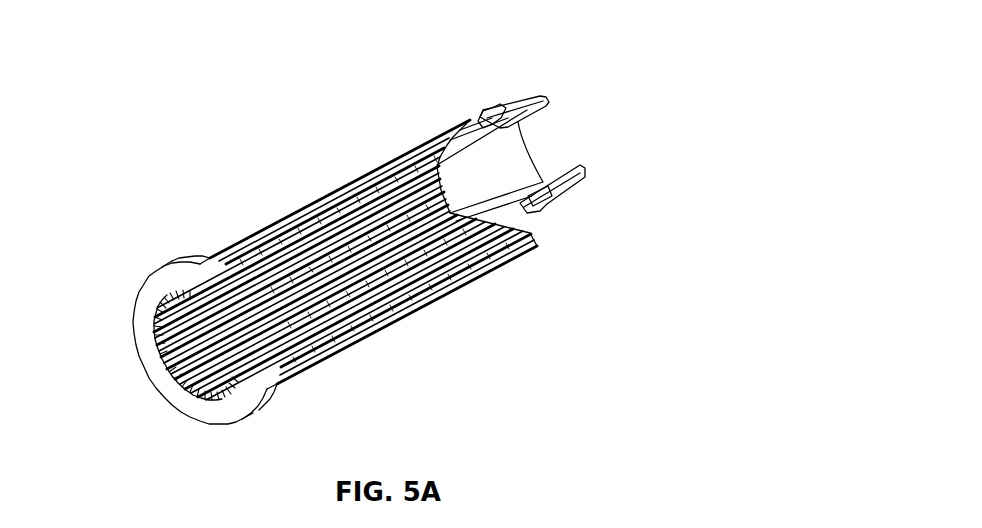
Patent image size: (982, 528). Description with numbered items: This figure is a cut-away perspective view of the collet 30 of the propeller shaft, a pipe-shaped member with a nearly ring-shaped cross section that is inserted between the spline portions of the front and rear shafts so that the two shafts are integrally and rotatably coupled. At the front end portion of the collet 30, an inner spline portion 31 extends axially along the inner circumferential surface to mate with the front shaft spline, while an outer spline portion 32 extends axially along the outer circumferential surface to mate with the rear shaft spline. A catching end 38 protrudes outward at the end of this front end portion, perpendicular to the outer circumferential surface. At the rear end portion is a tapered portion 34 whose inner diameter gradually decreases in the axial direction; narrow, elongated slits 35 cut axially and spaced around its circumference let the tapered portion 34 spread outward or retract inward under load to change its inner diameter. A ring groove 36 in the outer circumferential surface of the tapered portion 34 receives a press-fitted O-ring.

The collet 30 is at (248, 186).
The inner spline portion 31 is at (141, 335).
The outer spline portion 32 is at (353, 172).
The tapered portion 34 is at (535, 98).
The slits 35 is at (541, 180).
The ring groove 36 is at (503, 107).
The catching end 38 is at (177, 283).